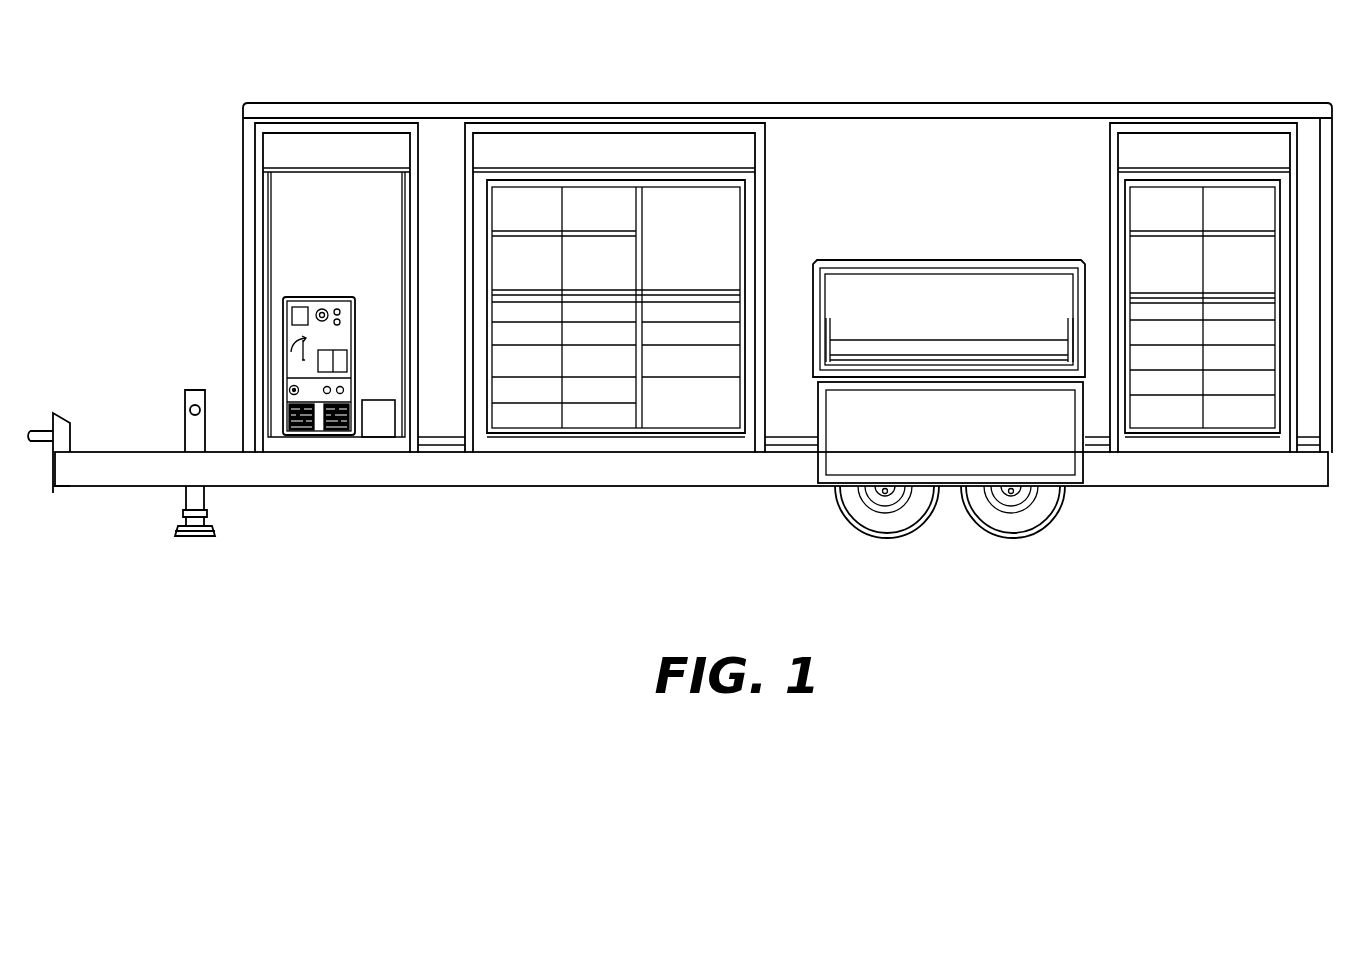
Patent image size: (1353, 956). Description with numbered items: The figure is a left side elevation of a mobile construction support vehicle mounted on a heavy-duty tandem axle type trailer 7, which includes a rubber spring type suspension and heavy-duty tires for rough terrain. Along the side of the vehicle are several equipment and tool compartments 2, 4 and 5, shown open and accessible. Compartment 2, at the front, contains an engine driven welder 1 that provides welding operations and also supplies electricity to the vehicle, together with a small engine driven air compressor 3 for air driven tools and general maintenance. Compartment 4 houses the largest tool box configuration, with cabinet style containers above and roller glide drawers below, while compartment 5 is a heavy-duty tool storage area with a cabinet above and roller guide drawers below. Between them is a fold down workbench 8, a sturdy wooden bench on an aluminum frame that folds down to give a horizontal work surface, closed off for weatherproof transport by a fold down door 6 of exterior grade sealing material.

The engine driven welder 1 is at (295, 368).
The compartment 2 is at (272, 187).
The engine driven air compressor 3 is at (368, 428).
The compartment 4 is at (700, 145).
The compartment 5 is at (1207, 145).
The fold down door 6 is at (960, 452).
The heavy-duty tandem axle type trailer 7 is at (1022, 503).
The fold down workbench 8 is at (1053, 345).